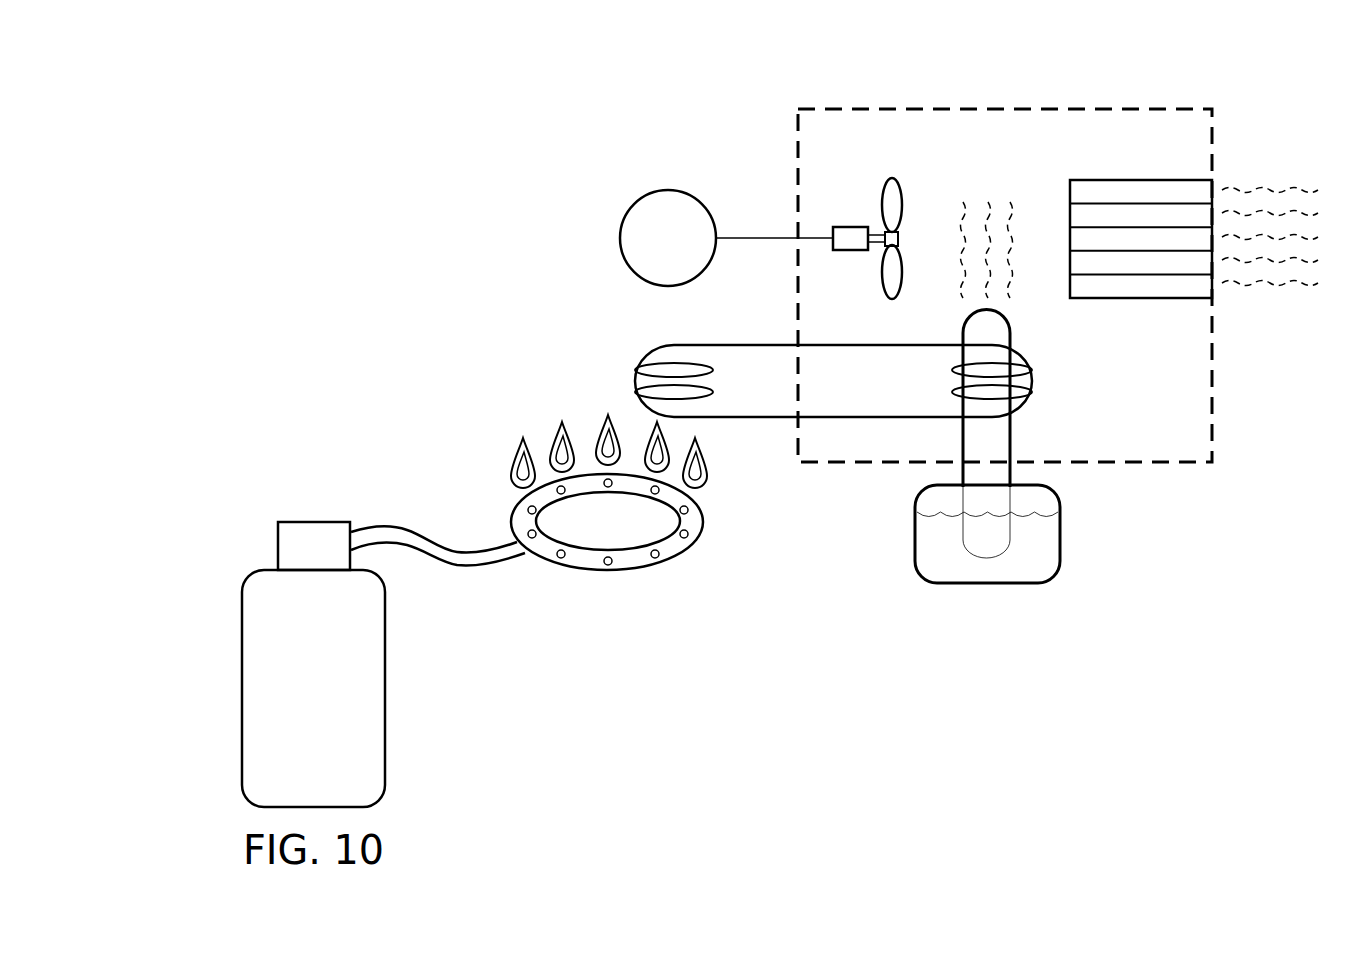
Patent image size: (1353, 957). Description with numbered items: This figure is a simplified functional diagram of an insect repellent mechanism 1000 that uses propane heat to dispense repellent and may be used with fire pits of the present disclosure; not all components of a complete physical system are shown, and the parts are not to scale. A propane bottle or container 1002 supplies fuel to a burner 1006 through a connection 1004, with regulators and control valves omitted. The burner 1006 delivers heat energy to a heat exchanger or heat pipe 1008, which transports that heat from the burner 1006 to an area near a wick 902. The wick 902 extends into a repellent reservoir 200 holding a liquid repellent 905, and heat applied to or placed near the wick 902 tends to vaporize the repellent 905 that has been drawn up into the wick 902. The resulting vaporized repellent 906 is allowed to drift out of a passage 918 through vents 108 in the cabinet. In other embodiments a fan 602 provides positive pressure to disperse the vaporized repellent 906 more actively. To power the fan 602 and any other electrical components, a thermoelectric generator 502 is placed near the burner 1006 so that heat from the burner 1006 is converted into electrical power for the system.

The insect repellent mechanism 1000 is at (361, 121).
The thermoelectric generator 502 is at (690, 256).
The fan 602 is at (850, 227).
The passage 918 is at (1213, 142).
The vent 108 is at (1140, 180).
The vaporized repellent 906 is at (1015, 220).
The heat pipe 1008 is at (760, 417).
The wick 902 is at (1017, 427).
The repellent reservoir 200 is at (1060, 533).
The repellent 905 is at (925, 548).
The burner 1006 is at (608, 572).
The connection 1004 is at (393, 527).
The propane container 1002 is at (242, 687).